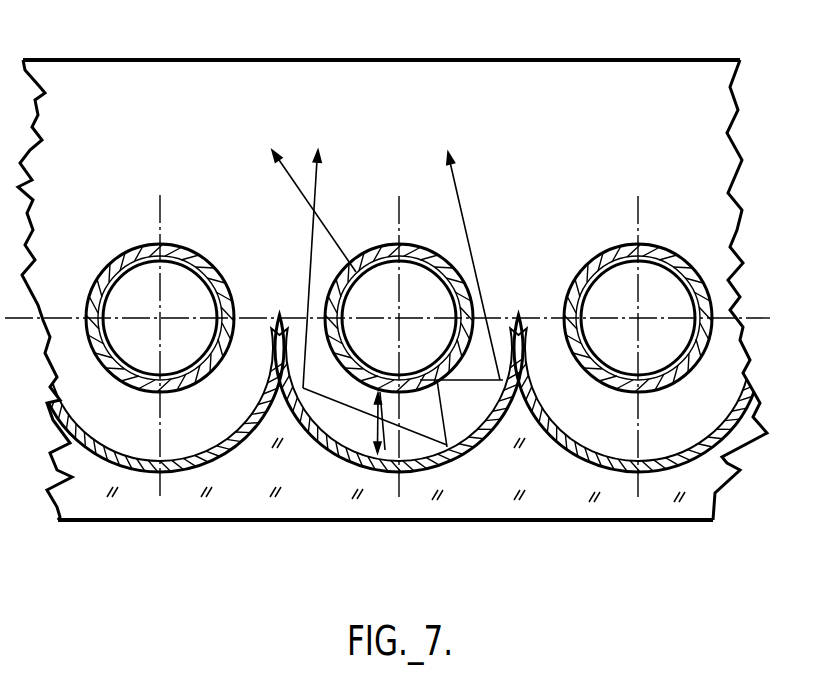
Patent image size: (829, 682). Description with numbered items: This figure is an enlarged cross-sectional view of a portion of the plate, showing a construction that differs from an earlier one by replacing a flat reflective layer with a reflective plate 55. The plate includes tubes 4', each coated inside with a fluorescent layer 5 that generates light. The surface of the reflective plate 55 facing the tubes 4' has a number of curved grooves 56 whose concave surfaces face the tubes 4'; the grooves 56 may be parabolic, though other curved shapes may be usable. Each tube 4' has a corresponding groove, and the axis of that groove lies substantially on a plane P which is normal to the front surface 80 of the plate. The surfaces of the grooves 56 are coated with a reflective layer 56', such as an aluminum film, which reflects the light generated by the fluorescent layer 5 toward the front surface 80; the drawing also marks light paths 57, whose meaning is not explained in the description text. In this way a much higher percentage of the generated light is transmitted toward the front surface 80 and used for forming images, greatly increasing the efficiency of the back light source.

The front surface 80 is at (540, 59).
The reflective plate 55 is at (298, 500).
The curved grooves 56 is at (400, 445).
The reflective layer 56' is at (399, 461).
The fluorescent layer 5 is at (118, 258).
The tube 4' is at (160, 281).
The plane P is at (399, 222).
The light rays 57 is at (385, 450).